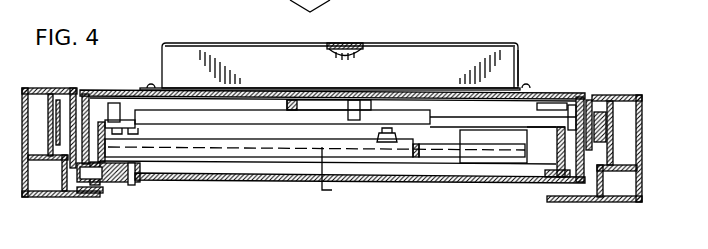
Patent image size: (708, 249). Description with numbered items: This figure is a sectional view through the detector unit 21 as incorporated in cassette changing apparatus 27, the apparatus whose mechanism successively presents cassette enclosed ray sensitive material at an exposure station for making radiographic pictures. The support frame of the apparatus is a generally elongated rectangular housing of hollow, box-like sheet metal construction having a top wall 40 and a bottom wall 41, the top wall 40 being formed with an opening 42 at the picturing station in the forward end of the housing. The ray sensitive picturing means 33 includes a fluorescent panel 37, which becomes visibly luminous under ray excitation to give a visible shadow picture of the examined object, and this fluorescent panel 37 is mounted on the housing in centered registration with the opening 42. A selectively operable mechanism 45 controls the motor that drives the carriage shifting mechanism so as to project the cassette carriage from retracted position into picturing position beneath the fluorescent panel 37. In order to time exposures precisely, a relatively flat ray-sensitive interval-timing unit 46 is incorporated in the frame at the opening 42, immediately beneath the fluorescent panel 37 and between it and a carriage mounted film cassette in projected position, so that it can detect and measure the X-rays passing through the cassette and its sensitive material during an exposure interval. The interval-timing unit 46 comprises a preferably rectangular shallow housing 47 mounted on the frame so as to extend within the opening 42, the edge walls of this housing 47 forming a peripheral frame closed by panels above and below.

The unit 21 is at (196, 40).
The cassette changing apparatus 27 is at (582, 91).
The ray sensitive picturing means 33 is at (392, 165).
The fluorescent panel 37 is at (345, 46).
The top wall 40 is at (119, 90).
The bottom wall 41 is at (188, 180).
The opening 42 is at (474, 96).
The selectively operable mechanism 45 is at (465, 147).
The ray-sensitive interval-timing unit 46 is at (522, 64).
The shallow housing 47 is at (400, 62).